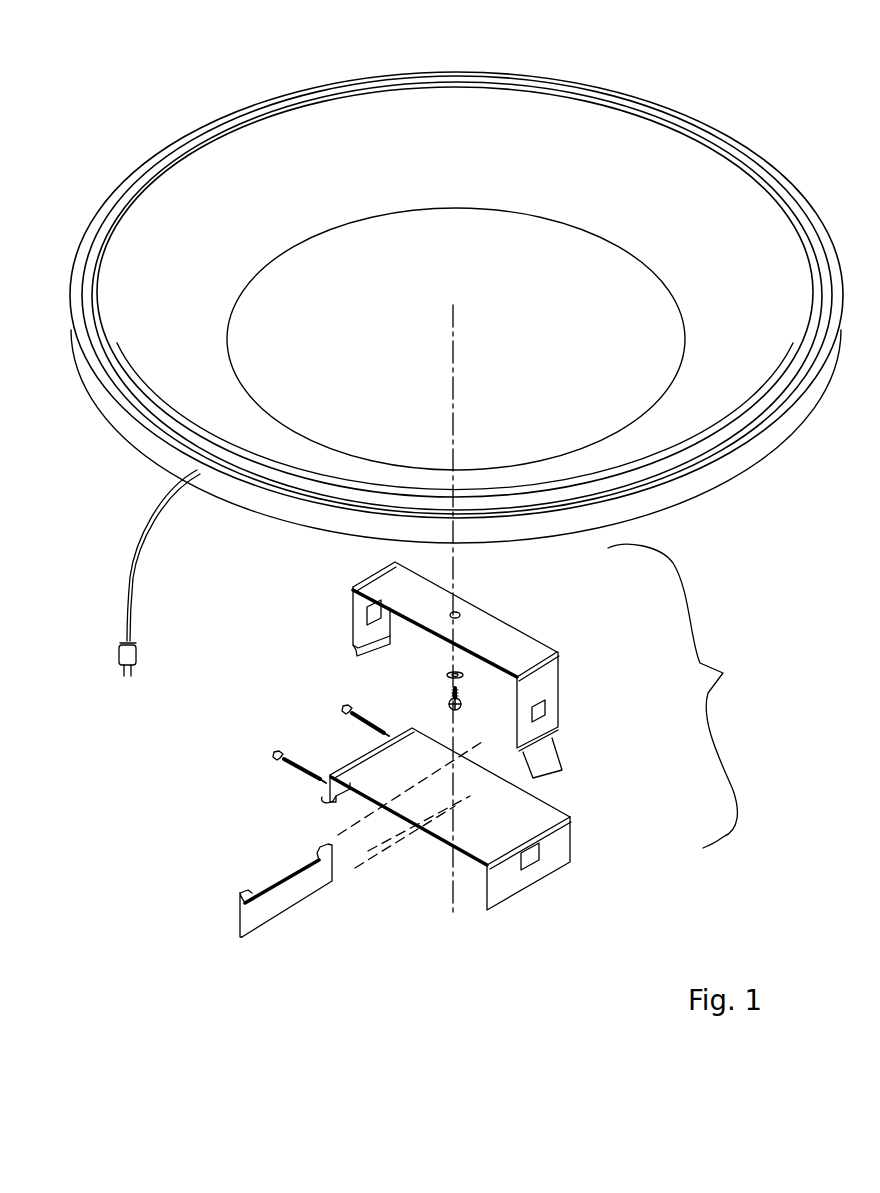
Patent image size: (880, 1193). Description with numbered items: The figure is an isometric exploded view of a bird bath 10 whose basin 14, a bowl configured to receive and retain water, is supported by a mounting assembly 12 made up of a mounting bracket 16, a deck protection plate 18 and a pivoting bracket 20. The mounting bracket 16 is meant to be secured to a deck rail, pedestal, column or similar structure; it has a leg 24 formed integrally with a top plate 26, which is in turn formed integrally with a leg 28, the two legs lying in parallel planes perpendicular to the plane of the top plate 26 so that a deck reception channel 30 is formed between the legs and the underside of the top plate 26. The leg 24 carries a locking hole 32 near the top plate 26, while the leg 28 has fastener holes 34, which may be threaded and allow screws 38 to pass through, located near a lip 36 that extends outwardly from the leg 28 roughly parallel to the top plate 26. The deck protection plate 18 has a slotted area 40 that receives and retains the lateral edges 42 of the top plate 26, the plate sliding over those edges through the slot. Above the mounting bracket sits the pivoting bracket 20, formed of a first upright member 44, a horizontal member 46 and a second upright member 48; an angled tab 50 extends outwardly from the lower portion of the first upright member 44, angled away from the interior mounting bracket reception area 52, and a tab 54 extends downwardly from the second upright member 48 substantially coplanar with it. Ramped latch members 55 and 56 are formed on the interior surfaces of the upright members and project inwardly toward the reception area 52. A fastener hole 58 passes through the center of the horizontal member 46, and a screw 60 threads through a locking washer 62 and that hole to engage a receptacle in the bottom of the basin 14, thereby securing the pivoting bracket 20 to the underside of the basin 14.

The bird bath 10 is at (163, 893).
The mounting assembly 12 is at (683, 696).
The basin 14 is at (600, 88).
The mounting bracket 16 is at (423, 833).
The deck protection plate 18 is at (267, 883).
The pivoting bracket 20 is at (454, 658).
The leg 24 is at (587, 845).
The top plate 26 is at (540, 820).
The leg 28 is at (347, 768).
The deck reception channel 30 is at (443, 857).
The locking hole 32 is at (533, 860).
The fastener holes 34 is at (338, 800).
The lip 36 is at (325, 802).
The screws 38 is at (272, 762).
The slotted area 40 is at (267, 888).
The lateral edges 42 is at (410, 822).
The first upright member 44 is at (575, 711).
The horizontal member 46 is at (500, 627).
The second upright member 48 is at (316, 642).
The angled tab 50 is at (553, 766).
The interior mounting bracket reception area 52 is at (406, 643).
The tab 54 is at (360, 653).
The ramped latch member 55 is at (542, 708).
The ramped latch member 56 is at (352, 590).
The fastener hole 58 is at (456, 612).
The screw 60 is at (446, 703).
The locking washer 62 is at (446, 675).